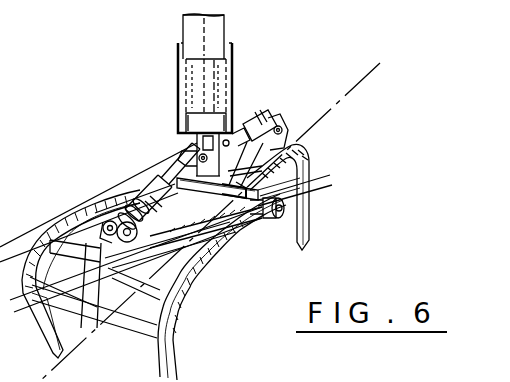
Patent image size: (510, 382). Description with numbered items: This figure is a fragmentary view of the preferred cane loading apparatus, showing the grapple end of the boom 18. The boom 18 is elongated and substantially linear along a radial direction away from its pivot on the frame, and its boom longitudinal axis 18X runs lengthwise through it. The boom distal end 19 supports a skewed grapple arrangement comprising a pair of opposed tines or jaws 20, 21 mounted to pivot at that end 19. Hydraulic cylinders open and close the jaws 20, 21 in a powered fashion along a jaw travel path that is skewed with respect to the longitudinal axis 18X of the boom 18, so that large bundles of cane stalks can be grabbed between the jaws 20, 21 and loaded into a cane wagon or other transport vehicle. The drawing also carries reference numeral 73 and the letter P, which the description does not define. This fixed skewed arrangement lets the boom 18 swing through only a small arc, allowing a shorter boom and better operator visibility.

The boom 18 is at (180, 41).
The boom longitudinal axis 18X is at (207, 78).
The boom distal end 19 is at (180, 117).
The tine or jaw 20 is at (309, 205).
The tine or jaw 21 is at (178, 343).
The pivot axis 73 is at (361, 81).
The pivot pin P is at (281, 226).